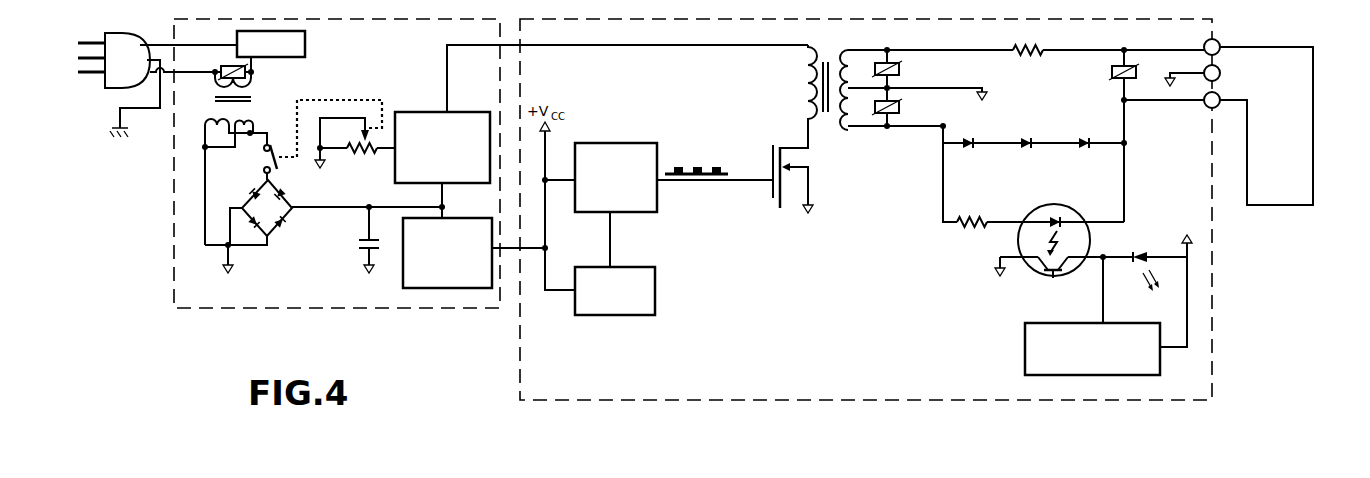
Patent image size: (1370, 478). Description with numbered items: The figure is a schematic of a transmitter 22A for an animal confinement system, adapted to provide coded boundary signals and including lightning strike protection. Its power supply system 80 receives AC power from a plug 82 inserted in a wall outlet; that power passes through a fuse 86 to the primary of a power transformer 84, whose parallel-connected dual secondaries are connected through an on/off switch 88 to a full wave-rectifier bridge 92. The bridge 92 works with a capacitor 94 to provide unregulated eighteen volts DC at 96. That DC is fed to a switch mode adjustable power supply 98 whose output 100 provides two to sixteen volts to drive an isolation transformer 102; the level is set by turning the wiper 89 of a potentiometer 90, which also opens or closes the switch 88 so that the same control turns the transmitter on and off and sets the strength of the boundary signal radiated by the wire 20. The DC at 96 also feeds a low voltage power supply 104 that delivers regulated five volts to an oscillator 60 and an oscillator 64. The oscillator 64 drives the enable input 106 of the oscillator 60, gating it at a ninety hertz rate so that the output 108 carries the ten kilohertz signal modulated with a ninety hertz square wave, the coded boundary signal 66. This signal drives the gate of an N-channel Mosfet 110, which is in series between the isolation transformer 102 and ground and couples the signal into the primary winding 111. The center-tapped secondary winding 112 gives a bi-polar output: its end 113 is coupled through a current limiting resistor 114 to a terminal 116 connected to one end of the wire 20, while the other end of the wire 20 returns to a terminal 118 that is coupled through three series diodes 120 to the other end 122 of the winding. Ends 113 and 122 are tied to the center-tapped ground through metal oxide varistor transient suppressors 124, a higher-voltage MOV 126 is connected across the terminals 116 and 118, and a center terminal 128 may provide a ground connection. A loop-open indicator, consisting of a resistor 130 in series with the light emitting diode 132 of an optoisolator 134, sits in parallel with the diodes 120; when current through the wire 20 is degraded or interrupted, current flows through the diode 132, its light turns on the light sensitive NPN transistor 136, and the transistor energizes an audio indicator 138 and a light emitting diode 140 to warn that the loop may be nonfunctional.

The power supply system 80 is at (179, 316).
The transmitter 22A is at (513, 357).
The plug 82 is at (125, 42).
The power transformer 84 is at (207, 98).
The fuse 86 is at (305, 44).
The on/off switch 88 is at (263, 166).
The wiper 89 is at (362, 128).
The potentiometer 90 is at (367, 170).
The full wave-rectifier bridge 92 is at (279, 242).
The capacitor 94 is at (355, 241).
The unregulated DC output 96 is at (450, 200).
The adjustable power supply 98 is at (417, 112).
The output 100 is at (463, 45).
The low voltage power supply 104 is at (437, 288).
The oscillator 60 is at (633, 143).
The oscillator 64 is at (638, 315).
The coded boundary signal 66 is at (690, 165).
The enable input 106 is at (612, 213).
The output 108 is at (744, 183).
The N-channel Mosfet 110 is at (789, 203).
The isolation transformer 102 is at (830, 98).
The primary winding 111 is at (810, 90).
The end of secondary winding 113 is at (843, 67).
The secondary winding 112 is at (845, 72).
The metal oxide varistor transient suppressors 124 is at (903, 73).
The other end of secondary winding 122 is at (842, 128).
The current limiting resistor 114 is at (1031, 60).
The series diodes 120 is at (980, 134).
The MOV 126 is at (1114, 67).
The terminal 116 is at (1222, 41).
The center terminal 128 is at (1230, 73).
The terminal 118 is at (1208, 110).
The wire 20 is at (1313, 205).
The resistor 130 is at (960, 238).
The light emitting diode 132 is at (1023, 251).
The optoisolator 134 is at (998, 238).
The light sensitive NPN transistor 136 is at (1037, 264).
The audio indicator 138 is at (1025, 360).
The light emitting diode 140 is at (1137, 242).